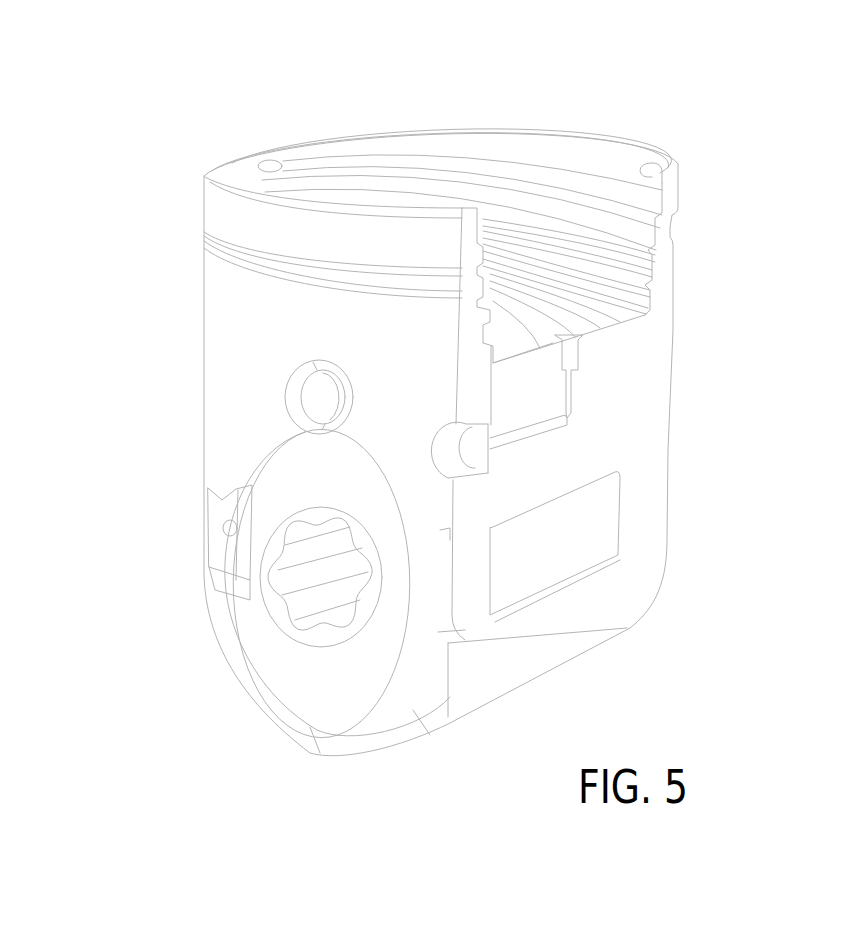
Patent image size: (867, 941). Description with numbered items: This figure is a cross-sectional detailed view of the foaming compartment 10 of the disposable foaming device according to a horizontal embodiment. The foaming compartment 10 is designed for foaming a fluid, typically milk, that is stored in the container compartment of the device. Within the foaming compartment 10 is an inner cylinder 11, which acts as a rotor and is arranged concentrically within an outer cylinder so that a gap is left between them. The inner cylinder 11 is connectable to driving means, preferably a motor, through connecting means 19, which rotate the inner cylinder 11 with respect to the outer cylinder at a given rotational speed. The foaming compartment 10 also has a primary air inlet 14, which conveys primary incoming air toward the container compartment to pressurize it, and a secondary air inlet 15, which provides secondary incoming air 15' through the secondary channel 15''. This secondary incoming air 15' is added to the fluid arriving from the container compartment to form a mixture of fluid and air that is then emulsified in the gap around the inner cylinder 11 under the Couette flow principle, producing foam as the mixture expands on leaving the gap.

The foaming compartment 10 is at (204, 333).
The inner cylinder 11 is at (292, 488).
The primary air inlet 14 is at (320, 404).
The secondary air inlet 15 is at (595, 529).
The secondary incoming air 15' is at (590, 259).
The secondary channel 15'' is at (637, 428).
The connecting means 19 is at (290, 590).